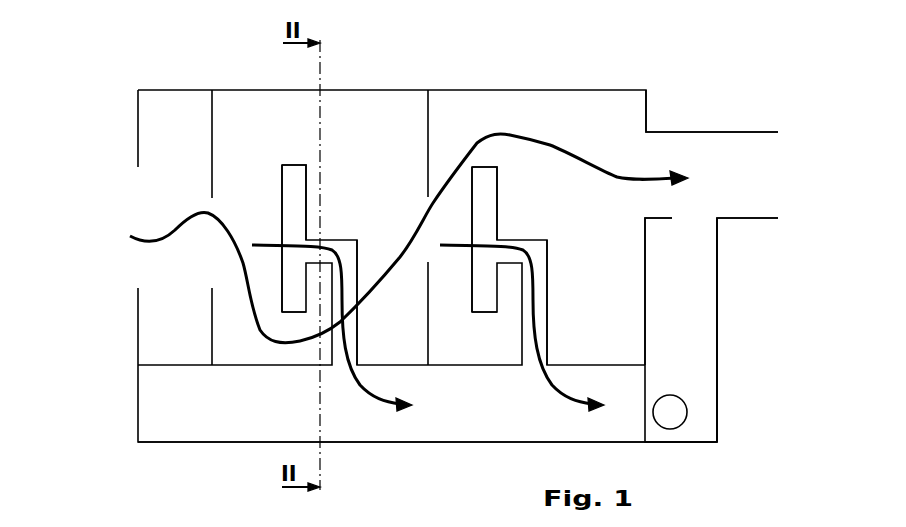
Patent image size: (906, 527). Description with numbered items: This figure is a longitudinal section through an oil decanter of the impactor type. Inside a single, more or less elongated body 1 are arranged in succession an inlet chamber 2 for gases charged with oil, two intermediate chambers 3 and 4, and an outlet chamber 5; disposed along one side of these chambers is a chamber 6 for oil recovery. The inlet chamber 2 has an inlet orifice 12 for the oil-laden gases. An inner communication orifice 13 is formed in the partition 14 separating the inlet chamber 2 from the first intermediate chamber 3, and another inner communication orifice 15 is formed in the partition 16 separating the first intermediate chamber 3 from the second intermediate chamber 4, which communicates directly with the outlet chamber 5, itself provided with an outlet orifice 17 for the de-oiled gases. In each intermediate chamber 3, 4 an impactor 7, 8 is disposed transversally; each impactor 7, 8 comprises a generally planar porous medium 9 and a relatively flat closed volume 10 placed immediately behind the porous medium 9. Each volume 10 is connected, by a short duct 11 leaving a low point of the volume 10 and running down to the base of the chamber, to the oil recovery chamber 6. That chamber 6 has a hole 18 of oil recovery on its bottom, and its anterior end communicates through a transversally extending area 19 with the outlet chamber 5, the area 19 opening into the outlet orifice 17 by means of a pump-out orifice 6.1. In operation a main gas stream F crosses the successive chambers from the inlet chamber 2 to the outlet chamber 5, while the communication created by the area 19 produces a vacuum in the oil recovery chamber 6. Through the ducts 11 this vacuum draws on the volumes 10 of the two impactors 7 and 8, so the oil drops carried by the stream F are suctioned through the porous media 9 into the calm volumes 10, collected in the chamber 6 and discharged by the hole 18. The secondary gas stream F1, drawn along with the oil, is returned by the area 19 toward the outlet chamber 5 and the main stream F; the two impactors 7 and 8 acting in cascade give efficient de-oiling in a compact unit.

The body 1 is at (600, 90).
The inlet chamber 2 is at (157, 341).
The first intermediate chamber 3 is at (372, 118).
The second intermediate chamber 4 is at (523, 117).
The outlet chamber 5 is at (727, 150).
The oil recovery chamber 6 is at (168, 410).
The pump-out orifice 6.1 is at (697, 220).
The first impactor 7 is at (272, 164).
The second impactor 8 is at (505, 197).
The porous medium 9 is at (282, 195).
The closed volume 10 is at (293, 300).
The duct 11 is at (355, 338).
The inlet orifice 12 is at (140, 190).
The inner communication orifice 13 is at (213, 205).
The partition 14 is at (210, 288).
The inner communication orifice 15 is at (420, 205).
The partition 16 is at (430, 142).
The outlet orifice 17 is at (752, 197).
The oil recovery hole 18 is at (668, 420).
The communication area 19 is at (693, 322).
The main gas stream F is at (550, 142).
The secondary gas stream F1 is at (428, 334).